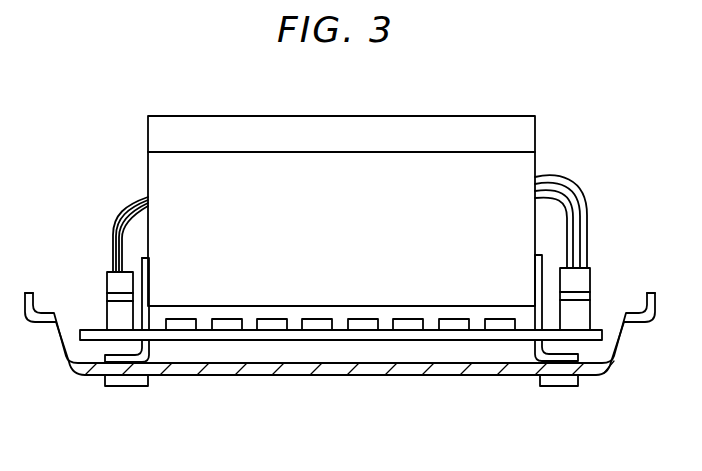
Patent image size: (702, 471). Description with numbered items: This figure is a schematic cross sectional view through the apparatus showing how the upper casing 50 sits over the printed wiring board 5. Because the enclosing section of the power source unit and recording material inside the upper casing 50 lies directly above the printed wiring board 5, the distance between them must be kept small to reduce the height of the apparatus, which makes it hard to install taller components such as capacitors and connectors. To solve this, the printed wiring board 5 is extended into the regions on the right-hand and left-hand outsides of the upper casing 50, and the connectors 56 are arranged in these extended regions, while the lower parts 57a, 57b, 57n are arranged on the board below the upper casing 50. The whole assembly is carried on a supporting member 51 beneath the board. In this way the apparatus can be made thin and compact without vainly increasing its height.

The upper casing 50 is at (437, 155).
The connectors 56 is at (110, 284).
The supporting tray / frame 51 is at (58, 347).
The printed wiring board 5 is at (318, 336).
The lower part 57a is at (181, 331).
The lower part 57b is at (229, 331).
The lower part 57n is at (504, 331).